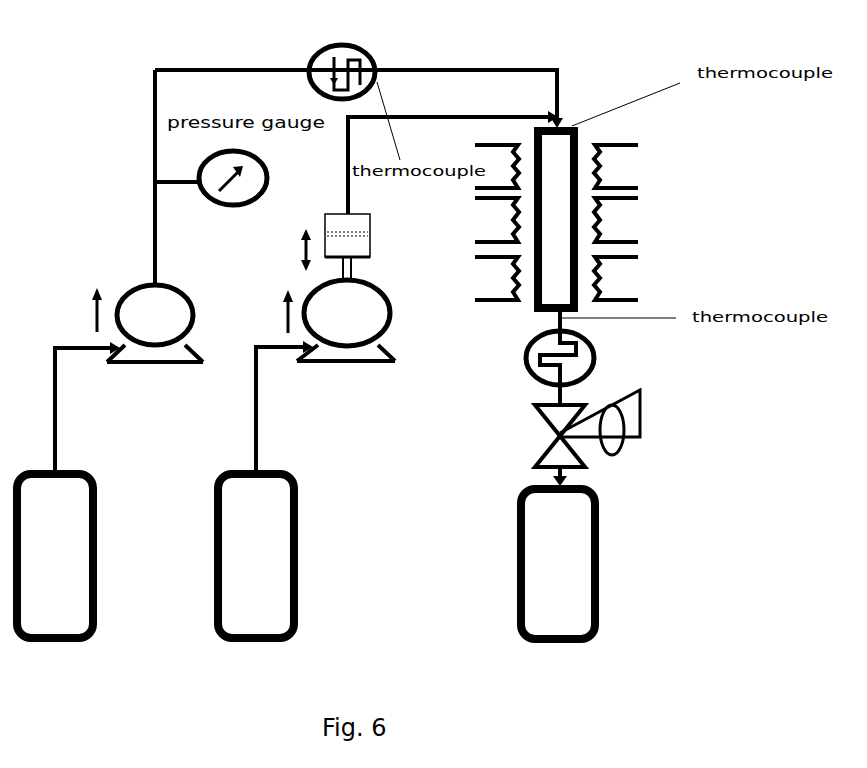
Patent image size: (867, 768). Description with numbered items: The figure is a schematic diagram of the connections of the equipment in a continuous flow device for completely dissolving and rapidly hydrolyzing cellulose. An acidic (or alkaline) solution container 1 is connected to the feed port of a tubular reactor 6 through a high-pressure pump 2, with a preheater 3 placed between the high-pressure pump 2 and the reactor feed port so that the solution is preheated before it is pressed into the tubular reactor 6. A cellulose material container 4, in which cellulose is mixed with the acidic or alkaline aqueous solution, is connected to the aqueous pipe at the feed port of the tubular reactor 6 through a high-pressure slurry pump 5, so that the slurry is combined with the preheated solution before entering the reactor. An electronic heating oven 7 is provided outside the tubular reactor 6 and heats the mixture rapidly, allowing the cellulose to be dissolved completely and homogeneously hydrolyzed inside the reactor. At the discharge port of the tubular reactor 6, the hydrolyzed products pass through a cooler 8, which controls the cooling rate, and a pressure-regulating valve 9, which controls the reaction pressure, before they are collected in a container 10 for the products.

The acidic (or alkaline) solution container 1 is at (55, 556).
The high-pressure pump 2 is at (155, 323).
The preheater 3 is at (330, 78).
The cellulose material container 4 is at (256, 556).
The high-pressure slurry pump 5 is at (346, 287).
The tubular reactor 6 is at (552, 279).
The electronic heating oven 7 is at (612, 277).
The cooler 8 is at (574, 362).
The pressure-regulating valve 9 is at (620, 429).
The container for the products 10 is at (558, 564).